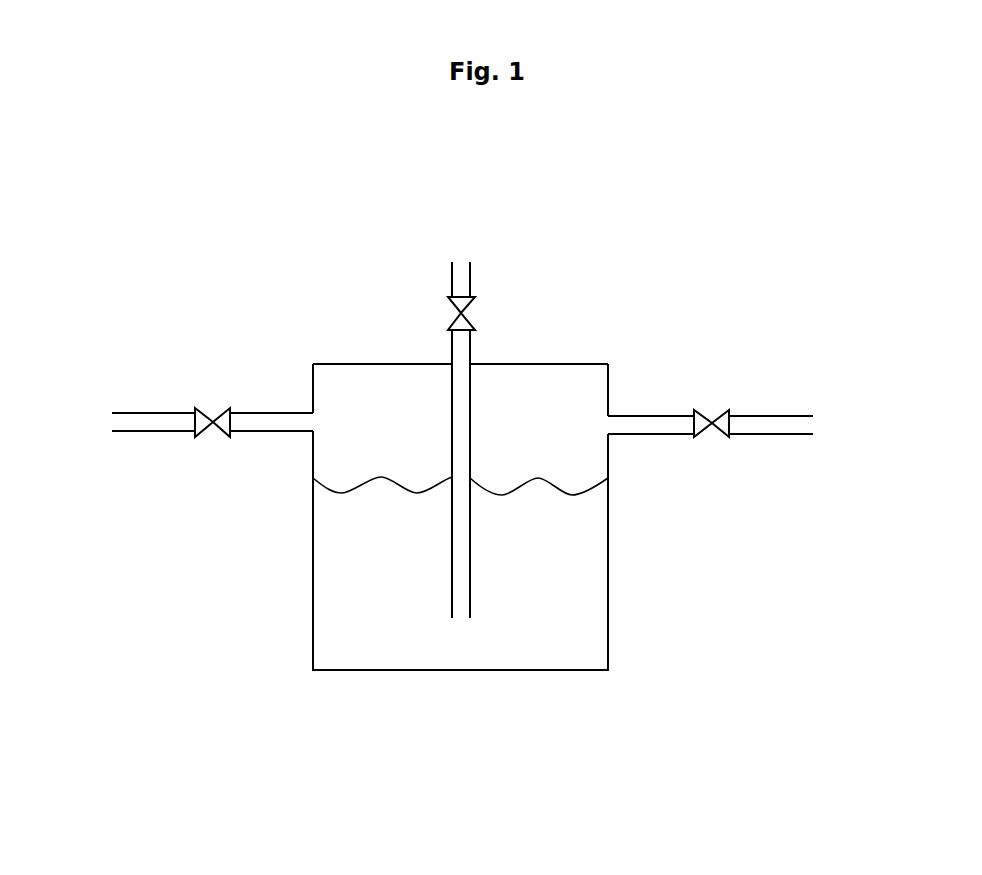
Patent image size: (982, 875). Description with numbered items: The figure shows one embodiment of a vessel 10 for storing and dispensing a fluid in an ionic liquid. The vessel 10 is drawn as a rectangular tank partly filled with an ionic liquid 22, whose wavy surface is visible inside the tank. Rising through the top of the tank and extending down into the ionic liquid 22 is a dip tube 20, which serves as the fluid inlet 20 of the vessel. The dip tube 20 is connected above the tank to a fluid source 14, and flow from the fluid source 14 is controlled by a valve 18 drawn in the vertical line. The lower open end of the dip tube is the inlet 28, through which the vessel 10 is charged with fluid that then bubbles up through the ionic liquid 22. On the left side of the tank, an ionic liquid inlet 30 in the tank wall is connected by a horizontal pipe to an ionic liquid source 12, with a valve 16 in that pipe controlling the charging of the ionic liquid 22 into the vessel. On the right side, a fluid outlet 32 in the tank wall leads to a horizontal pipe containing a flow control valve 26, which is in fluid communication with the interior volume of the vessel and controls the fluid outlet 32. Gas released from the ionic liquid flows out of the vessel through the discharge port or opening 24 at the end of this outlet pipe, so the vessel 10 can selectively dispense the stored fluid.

The vessel 10 is at (312, 590).
The ionic liquid source 12 is at (112, 420).
The fluid source 14 is at (463, 258).
The valve 16 is at (212, 415).
The valve 18 is at (468, 310).
The fluid inlet / dip tube 20 is at (472, 445).
The ionic liquid 22 is at (566, 552).
The discharge port or opening 24 is at (817, 425).
The flow control valve 26 is at (713, 412).
The inlet 28 is at (457, 622).
The ionic liquid inlet 30 is at (309, 418).
The fluid outlet 32 is at (610, 420).